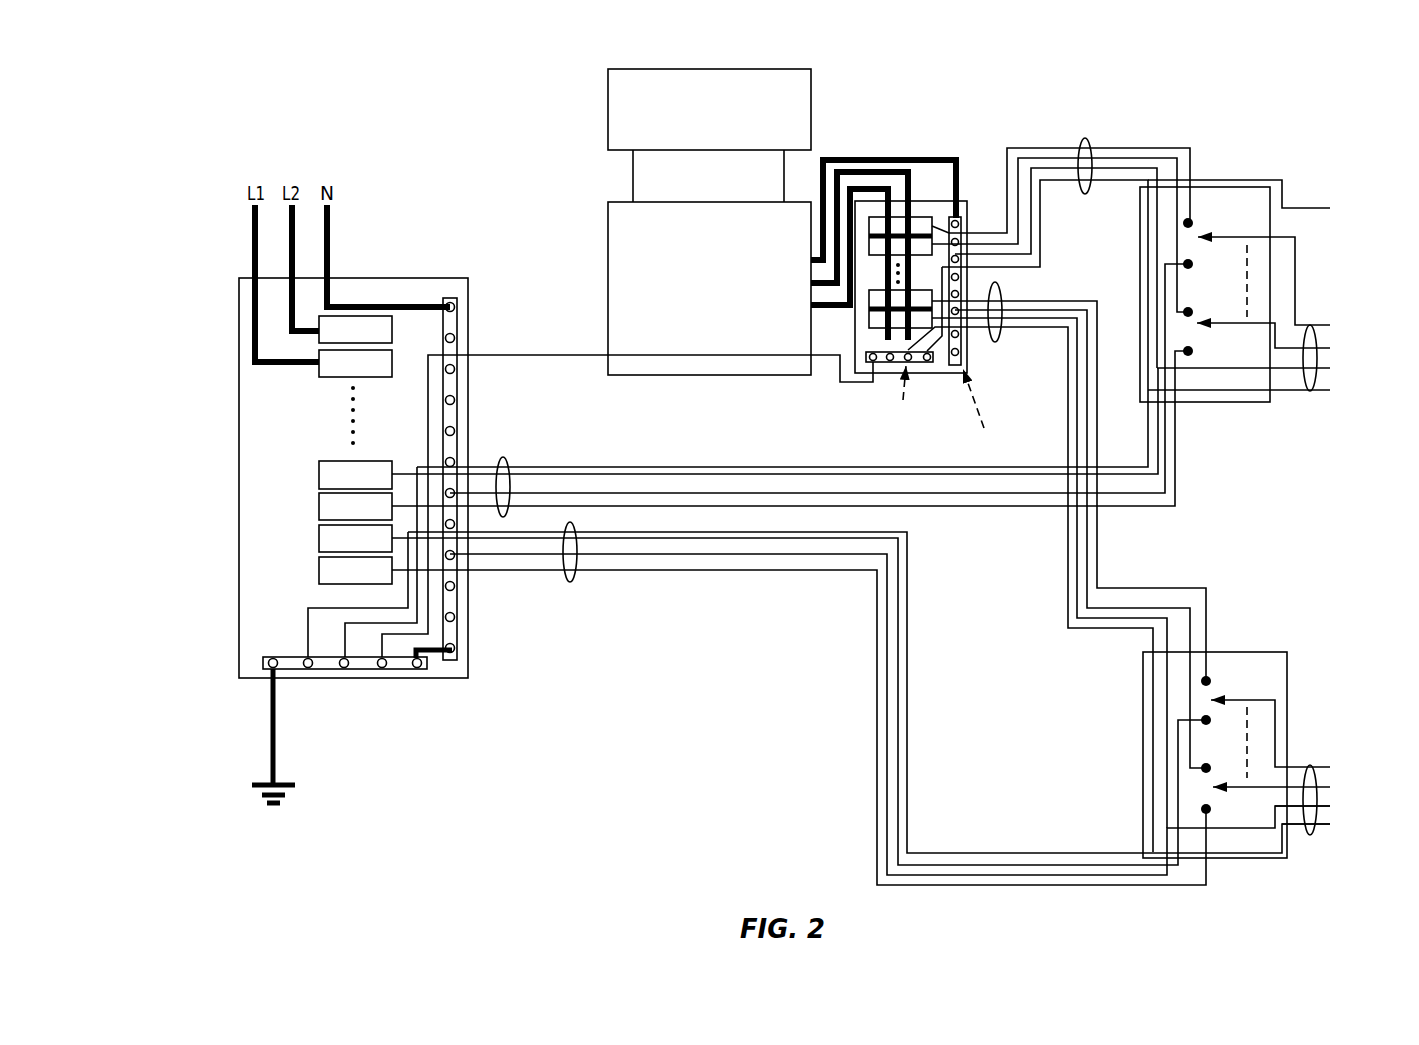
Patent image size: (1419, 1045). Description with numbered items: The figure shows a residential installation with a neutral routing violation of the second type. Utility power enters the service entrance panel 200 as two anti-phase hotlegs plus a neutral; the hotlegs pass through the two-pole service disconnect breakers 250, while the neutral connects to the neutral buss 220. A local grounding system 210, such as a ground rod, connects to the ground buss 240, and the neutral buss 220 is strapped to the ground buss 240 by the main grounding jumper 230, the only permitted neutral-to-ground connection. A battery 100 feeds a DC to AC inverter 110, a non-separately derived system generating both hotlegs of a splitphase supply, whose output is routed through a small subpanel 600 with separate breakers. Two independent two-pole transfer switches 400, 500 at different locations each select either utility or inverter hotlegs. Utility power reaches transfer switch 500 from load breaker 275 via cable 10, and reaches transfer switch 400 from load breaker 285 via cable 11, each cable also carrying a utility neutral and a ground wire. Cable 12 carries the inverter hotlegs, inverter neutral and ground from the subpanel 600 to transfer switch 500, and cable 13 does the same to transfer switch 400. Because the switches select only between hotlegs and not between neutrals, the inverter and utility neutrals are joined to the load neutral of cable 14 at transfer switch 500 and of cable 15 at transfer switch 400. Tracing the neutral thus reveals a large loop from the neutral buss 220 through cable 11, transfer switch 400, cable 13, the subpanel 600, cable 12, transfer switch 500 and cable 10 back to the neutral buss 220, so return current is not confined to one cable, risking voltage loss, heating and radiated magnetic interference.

The battery 100 is at (725, 129).
The DC to AC inverter 110 is at (725, 274).
The service entrance panel 200 is at (482, 627).
The local grounding system 210 is at (309, 792).
The neutral buss 220 is at (448, 297).
The main grounding jumper 230 is at (432, 658).
The ground buss 240 is at (367, 677).
The service disconnect breakers 250 is at (345, 326).
The load breaker 275 is at (307, 488).
The load breaker 285 is at (305, 560).
The small subpanel 600 is at (969, 198).
The transfer switch 500 is at (1263, 186).
The transfer switch 400 is at (1256, 651).
The cable 10 is at (509, 460).
The cable 11 is at (578, 576).
The cable 12 is at (1088, 137).
The cable 13 is at (1001, 296).
The cable 14 is at (1312, 392).
The cable 15 is at (1316, 765).